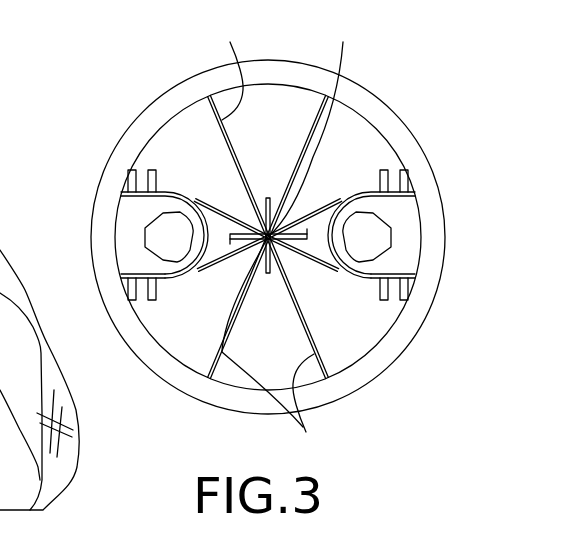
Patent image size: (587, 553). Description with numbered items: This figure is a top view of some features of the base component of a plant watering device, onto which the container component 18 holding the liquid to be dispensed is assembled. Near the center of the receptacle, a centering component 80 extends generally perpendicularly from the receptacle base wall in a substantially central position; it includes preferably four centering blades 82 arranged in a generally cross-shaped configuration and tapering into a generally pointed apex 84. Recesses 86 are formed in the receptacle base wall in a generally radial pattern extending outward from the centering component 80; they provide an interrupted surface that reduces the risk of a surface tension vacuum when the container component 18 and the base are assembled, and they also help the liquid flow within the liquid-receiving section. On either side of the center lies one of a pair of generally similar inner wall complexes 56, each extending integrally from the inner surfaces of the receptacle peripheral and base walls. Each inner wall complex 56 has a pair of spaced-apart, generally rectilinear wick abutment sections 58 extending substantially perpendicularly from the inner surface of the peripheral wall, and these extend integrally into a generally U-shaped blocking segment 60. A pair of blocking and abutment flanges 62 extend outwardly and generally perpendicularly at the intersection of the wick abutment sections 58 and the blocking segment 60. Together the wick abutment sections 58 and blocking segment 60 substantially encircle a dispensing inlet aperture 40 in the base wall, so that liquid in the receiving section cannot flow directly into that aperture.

The container component 18 is at (0, 113).
The dispensing inlet aperture 40 is at (172, 228).
The inner wall complex 56 is at (180, 195).
The wick abutment section 58 is at (134, 169).
The U-shaped blocking segment 60 is at (179, 280).
The blocking and abutment flange 62 is at (152, 173).
The centering component 80 is at (270, 165).
The centering blade 82 is at (263, 210).
The pointed apex 84 is at (313, 127).
The recess 86 is at (264, 232).